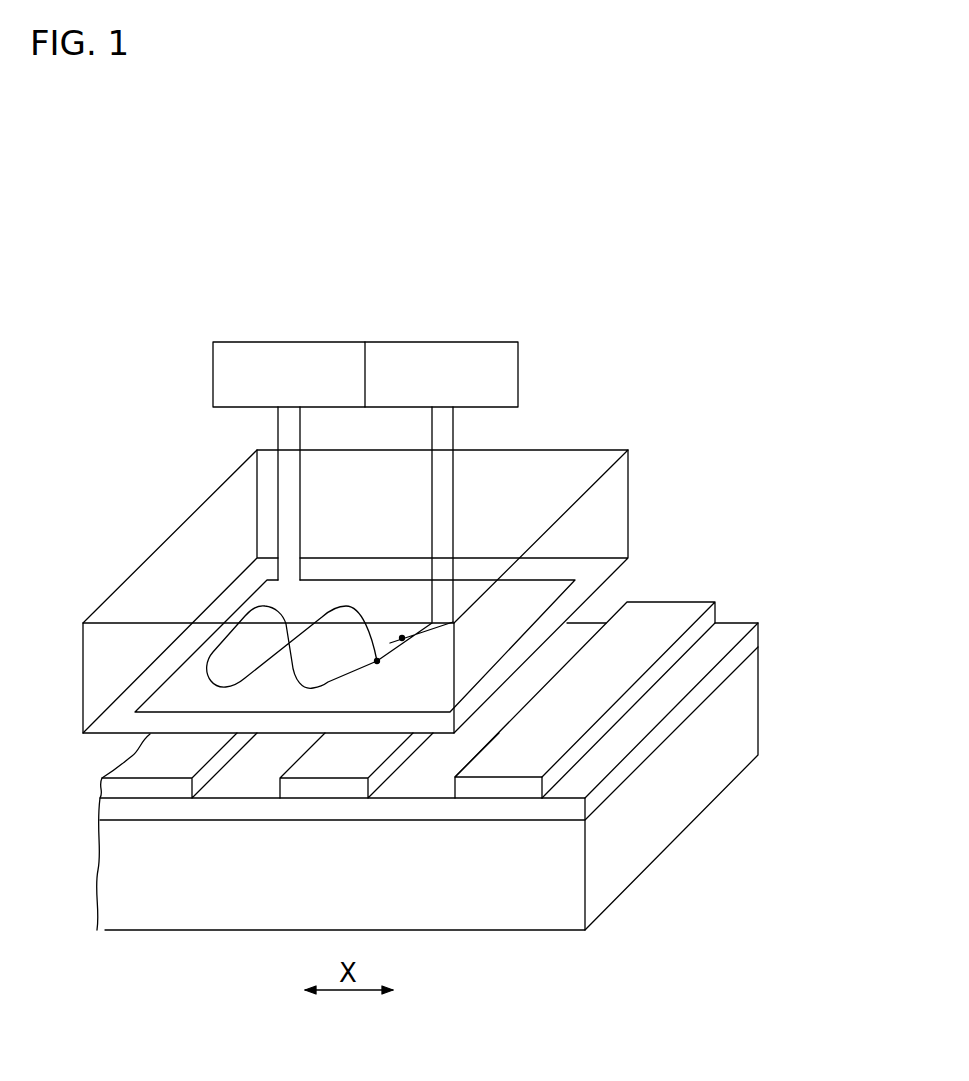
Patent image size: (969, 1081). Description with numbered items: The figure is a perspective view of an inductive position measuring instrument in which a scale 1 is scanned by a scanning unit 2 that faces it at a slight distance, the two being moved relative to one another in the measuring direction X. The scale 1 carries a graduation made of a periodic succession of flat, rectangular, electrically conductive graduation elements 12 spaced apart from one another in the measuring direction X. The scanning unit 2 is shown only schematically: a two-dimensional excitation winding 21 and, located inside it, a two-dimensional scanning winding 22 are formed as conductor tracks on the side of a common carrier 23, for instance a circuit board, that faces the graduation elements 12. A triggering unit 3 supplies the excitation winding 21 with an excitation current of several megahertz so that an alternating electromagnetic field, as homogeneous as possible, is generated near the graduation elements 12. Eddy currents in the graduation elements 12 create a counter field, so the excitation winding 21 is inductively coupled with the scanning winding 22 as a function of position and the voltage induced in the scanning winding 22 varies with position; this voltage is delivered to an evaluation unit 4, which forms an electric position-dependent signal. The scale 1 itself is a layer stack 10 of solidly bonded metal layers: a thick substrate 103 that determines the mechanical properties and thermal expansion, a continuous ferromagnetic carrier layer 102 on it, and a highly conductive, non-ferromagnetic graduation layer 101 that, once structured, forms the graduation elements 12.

The scale 1 is at (468, 767).
The scanning unit 2 is at (382, 552).
The triggering unit 3 is at (281, 367).
The evaluation unit 4 is at (440, 367).
The layer stack 10 is at (468, 779).
The graduation elements 12 is at (147, 790).
The excitation winding 21 is at (187, 657).
The scanning winding 22 is at (250, 612).
The carrier 23 is at (543, 472).
The graduation layer 101 is at (563, 748).
The carrier layer 102 is at (600, 787).
The substrate 103 is at (600, 867).